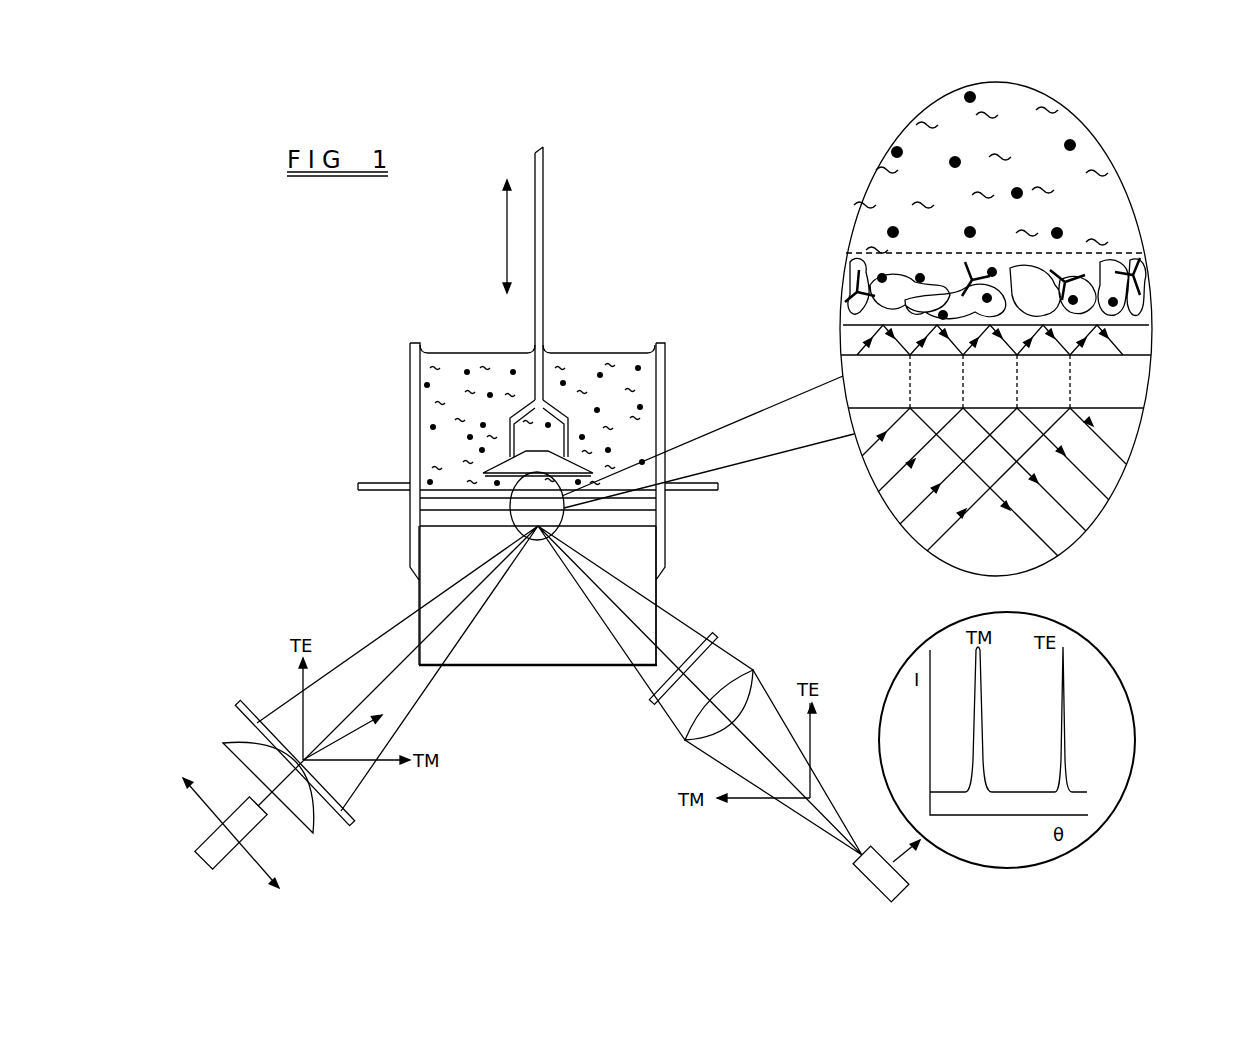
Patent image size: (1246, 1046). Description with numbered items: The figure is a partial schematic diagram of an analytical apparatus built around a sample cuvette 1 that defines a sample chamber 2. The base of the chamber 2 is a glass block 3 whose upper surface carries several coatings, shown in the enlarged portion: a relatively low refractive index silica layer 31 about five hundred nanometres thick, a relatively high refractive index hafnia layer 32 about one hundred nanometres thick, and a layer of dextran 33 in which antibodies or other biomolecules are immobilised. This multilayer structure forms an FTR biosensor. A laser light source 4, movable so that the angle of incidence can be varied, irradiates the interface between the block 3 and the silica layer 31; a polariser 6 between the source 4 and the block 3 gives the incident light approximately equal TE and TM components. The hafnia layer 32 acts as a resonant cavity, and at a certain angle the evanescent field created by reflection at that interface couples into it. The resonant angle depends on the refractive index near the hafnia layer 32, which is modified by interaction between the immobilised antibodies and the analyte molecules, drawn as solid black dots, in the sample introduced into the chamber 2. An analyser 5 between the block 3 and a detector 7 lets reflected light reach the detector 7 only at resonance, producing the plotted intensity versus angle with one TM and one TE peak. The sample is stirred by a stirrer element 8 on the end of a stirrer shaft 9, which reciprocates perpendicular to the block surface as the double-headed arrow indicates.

The sample cuvette 1 is at (380, 425).
The sample chamber 2 is at (613, 383).
The glass block 3 is at (528, 645).
The laser light source 4 is at (220, 855).
The analyser 5 is at (717, 640).
The polariser 6 is at (357, 810).
The detector 7 is at (853, 882).
The stirrer element 8 is at (497, 463).
The stirrer shaft 9 is at (545, 236).
The silica layer 31 is at (1130, 382).
The hafnia layer 32 is at (1148, 335).
The dextran layer 33 is at (1148, 280).